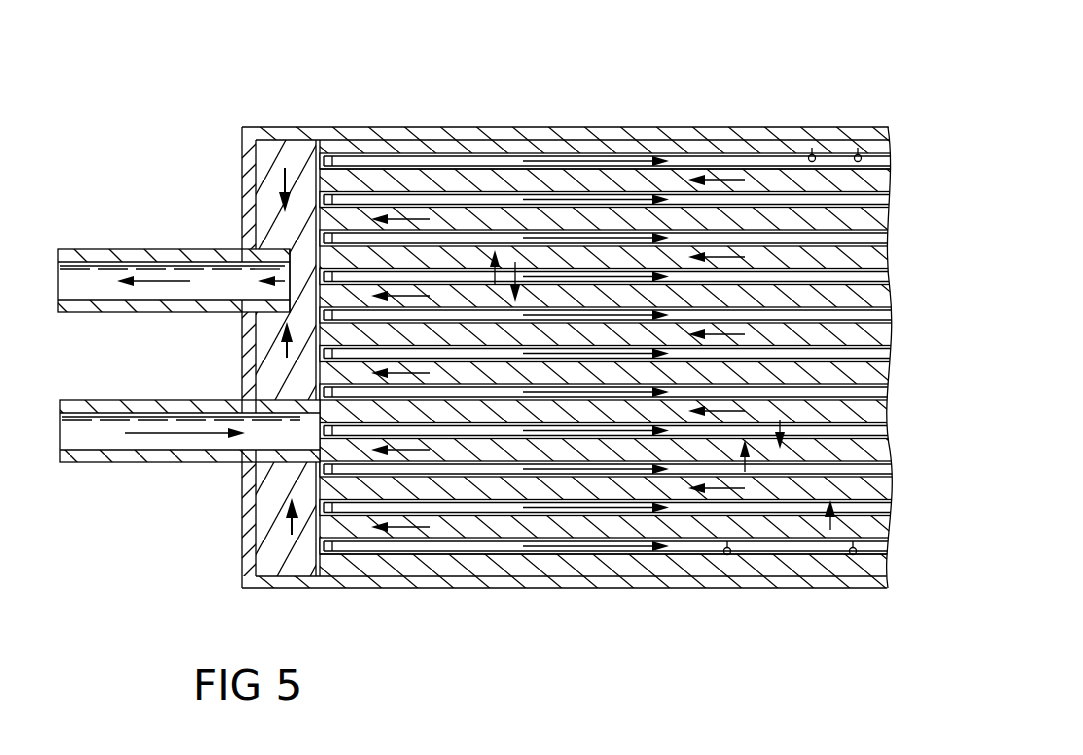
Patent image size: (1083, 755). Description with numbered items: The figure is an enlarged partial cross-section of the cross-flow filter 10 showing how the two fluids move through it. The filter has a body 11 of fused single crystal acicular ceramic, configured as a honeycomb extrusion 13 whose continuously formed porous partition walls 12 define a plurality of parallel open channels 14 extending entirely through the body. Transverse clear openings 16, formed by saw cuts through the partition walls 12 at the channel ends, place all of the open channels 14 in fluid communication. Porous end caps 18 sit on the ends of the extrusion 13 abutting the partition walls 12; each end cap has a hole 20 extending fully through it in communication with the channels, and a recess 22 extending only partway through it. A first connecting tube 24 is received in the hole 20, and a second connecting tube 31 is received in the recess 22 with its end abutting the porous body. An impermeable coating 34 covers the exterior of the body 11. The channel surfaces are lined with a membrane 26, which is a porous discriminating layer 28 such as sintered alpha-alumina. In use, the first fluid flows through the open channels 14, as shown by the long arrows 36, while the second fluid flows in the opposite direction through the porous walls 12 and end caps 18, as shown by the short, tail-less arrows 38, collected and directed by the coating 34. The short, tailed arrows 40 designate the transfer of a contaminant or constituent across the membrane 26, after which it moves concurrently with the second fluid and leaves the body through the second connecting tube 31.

The cross-flow filter 10 is at (533, 89).
The body 11 is at (677, 120).
The partition walls 12 is at (400, 183).
The honeycomb extrusion 13 is at (768, 240).
The open channels 14 is at (745, 188).
The transverse clear openings 16 is at (315, 205).
The porous end caps 18 is at (262, 553).
The hole 20 is at (283, 454).
The recess 22 is at (305, 285).
The first connecting tube 24 is at (118, 458).
The membrane 26 is at (860, 154).
The porous discriminating layer 28 is at (818, 153).
The second connecting tube 31 is at (108, 249).
The impermeable coating 34 is at (603, 130).
The long arrows 36 is at (547, 200).
The short, tail-less arrows 38 is at (283, 193).
The short, tailed arrows 40 is at (510, 262).